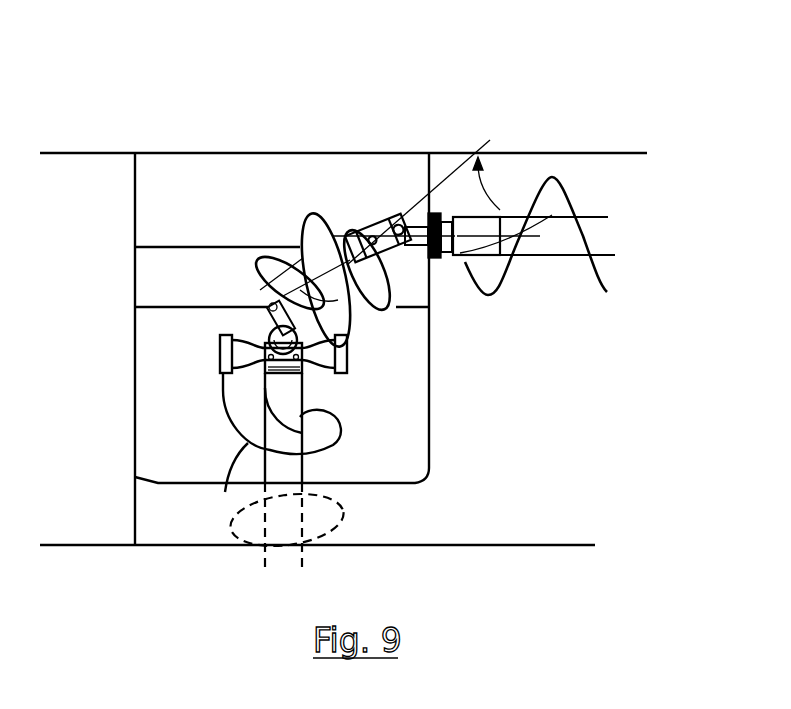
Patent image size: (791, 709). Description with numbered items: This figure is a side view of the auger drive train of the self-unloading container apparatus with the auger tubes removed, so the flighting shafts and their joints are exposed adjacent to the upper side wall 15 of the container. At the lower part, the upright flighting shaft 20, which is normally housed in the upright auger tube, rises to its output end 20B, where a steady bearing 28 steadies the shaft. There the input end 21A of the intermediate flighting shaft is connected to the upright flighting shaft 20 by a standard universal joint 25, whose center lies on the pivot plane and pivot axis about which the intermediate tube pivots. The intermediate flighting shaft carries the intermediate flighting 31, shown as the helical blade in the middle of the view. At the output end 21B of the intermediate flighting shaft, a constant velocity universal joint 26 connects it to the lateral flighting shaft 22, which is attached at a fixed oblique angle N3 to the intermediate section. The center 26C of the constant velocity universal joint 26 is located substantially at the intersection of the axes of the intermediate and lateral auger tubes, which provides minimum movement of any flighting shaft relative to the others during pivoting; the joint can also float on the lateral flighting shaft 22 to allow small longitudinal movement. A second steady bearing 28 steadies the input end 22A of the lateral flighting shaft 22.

The upper side wall 15 is at (218, 173).
The upright flighting shaft 20 is at (262, 497).
The output end of the upright flighting shaft 20B is at (293, 387).
The input end of the intermediate flighting shaft 21A is at (300, 245).
The output end of the intermediate flighting shaft 21B is at (360, 325).
The lateral flighting shaft 22 is at (592, 228).
The input end of the lateral flighting shaft 22A is at (452, 218).
The standard universal joint 25 is at (270, 304).
The constant velocity universal joint 26 is at (392, 272).
The center of the constant velocity universal joint 26C is at (372, 222).
The steady bearings 28 is at (428, 215).
The intermediate flighting 31 is at (362, 305).
The fixed oblique angle N3 is at (438, 202).